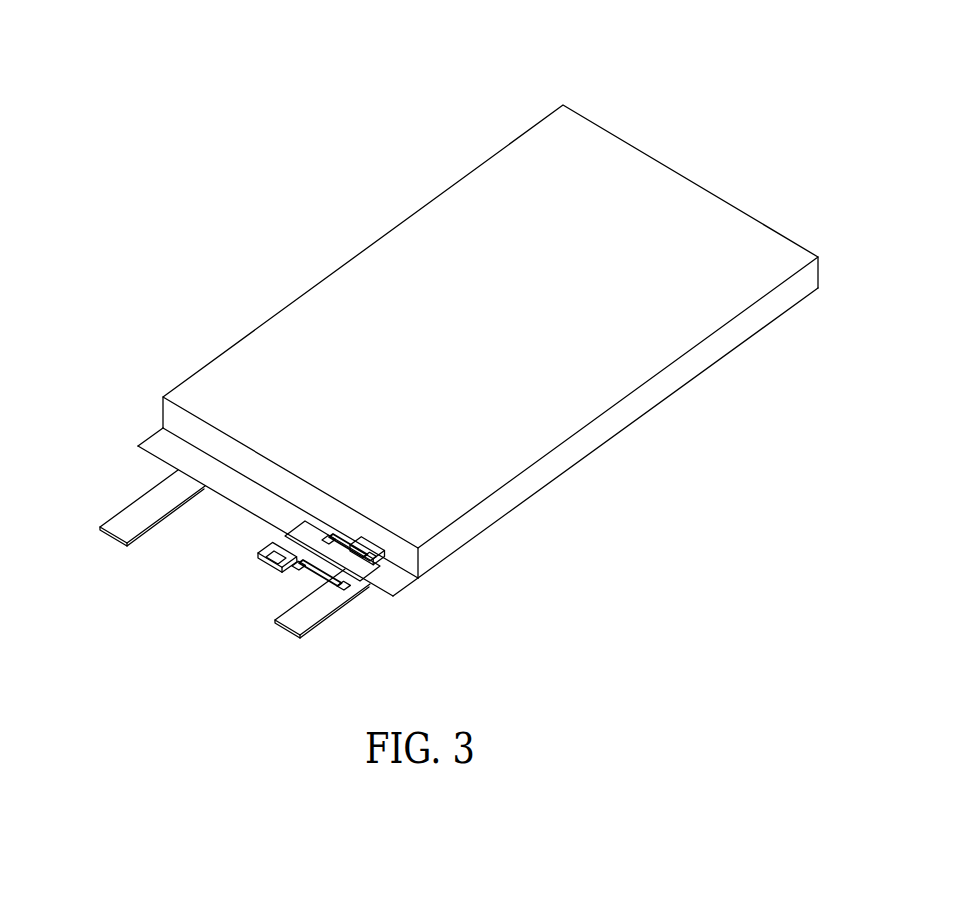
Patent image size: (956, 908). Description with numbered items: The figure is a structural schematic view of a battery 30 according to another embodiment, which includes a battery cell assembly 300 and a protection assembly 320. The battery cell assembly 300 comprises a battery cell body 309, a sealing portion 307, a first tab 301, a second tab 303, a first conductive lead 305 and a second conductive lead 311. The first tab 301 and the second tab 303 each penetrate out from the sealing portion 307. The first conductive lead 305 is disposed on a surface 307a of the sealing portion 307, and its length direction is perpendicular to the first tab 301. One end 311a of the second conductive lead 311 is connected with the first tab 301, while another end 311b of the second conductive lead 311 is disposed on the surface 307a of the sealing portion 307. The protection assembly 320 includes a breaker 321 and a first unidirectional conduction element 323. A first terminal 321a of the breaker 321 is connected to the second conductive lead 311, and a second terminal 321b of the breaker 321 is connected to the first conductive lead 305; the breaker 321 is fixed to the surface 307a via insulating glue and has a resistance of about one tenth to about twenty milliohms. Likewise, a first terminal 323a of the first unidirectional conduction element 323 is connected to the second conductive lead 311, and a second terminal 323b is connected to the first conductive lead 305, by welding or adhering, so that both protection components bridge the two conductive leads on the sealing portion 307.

The battery 30 is at (452, 31).
The battery cell assembly 300 is at (356, 246).
The first tab 301 is at (265, 561).
The second tab 303 is at (120, 522).
The first conductive lead 305 is at (357, 597).
The sealing portion 307 is at (143, 443).
The surface of the sealing portion 307a is at (183, 452).
The battery cell body 309 is at (547, 478).
The second conductive lead 311 is at (292, 537).
The one end of the second conductive lead 311a is at (260, 553).
The another end of the second conductive lead 311b is at (312, 525).
The protection assembly 320 is at (337, 540).
The breaker 321 is at (353, 545).
The first terminal of the breaker 321a is at (331, 538).
The second terminal of the breaker 321b is at (368, 553).
The first unidirectional conduction element 323 is at (310, 577).
The first terminal of the first unidirectional conduction element 323a is at (292, 566).
The second terminal of the first unidirectional conduction element 323b is at (335, 590).